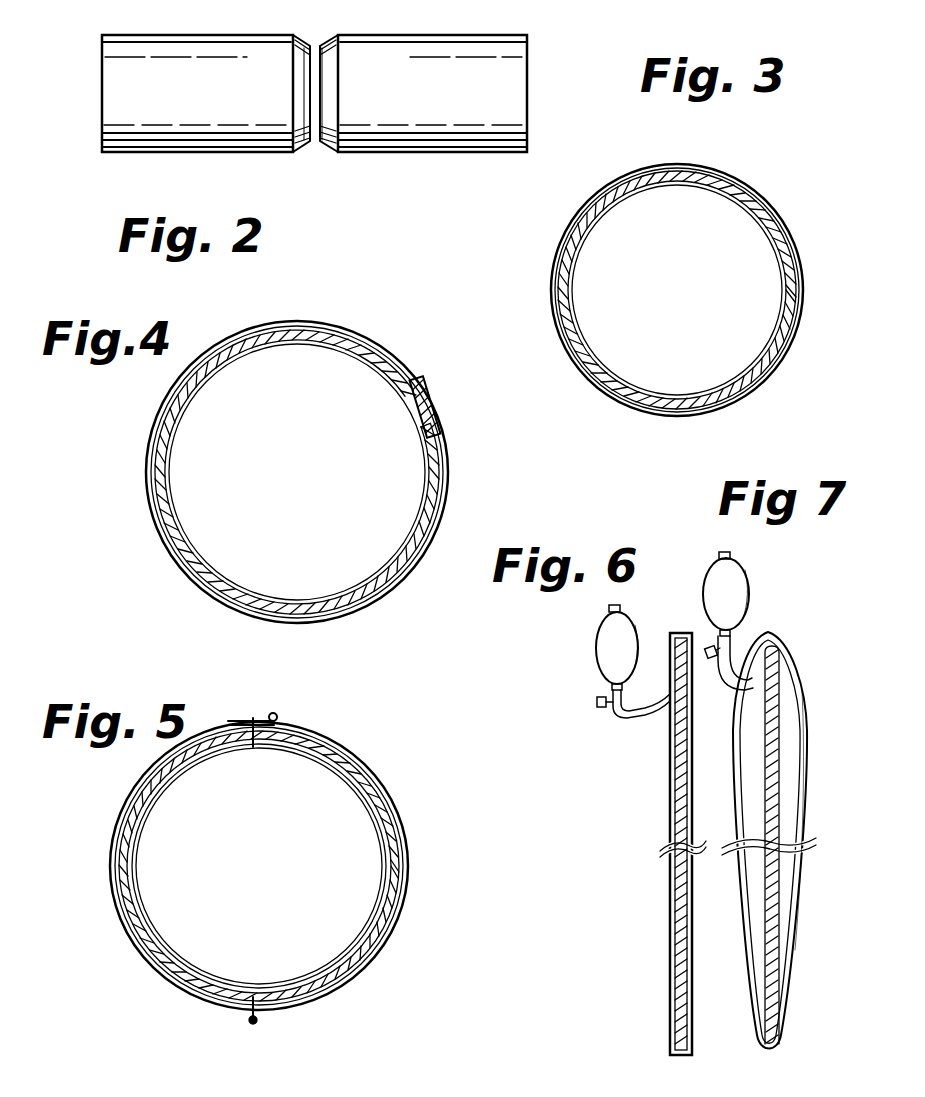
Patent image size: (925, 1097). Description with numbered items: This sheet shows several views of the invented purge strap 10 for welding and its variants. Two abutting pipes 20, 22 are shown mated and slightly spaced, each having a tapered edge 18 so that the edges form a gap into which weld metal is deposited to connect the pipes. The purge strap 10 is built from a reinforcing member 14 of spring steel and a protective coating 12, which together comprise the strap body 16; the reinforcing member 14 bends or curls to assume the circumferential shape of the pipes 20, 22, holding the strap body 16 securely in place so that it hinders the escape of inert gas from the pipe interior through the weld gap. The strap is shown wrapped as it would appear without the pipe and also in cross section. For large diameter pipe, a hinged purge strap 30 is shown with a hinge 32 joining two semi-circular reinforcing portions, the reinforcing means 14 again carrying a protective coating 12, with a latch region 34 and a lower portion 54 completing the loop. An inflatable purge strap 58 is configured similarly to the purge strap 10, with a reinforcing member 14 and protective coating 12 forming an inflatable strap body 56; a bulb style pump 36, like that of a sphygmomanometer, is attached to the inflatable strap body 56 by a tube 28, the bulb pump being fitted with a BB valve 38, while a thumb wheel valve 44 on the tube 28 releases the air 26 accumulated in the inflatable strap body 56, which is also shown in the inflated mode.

In FIG. 3, the purge strap 10 is at (645, 264).
In FIG. 4, the purge strap 10 is at (307, 454).
In FIG. 3, the protective coating 12 is at (738, 166).
In FIG. 4, the protective coating 12 is at (440, 386).
In FIG. 5, the protective coating 12 is at (400, 828).
In FIG. 6, the protective coating 12 is at (672, 1010).
In FIG. 7, the protective coating 12 is at (738, 884).
In FIG. 3, the reinforcing member 14 is at (565, 234).
In FIG. 4, the reinforcing member 14 is at (163, 464).
In FIG. 5, the reinforcing member 14 is at (400, 866).
In FIG. 6, the reinforcing member 14 is at (670, 794).
In FIG. 7, the reinforcing member 14 is at (778, 775).
In FIG. 2, the strap body 16 is at (308, 47).
In FIG. 3, the strap body 16 is at (598, 352).
In FIG. 4, the strap body 16 is at (210, 576).
In FIG. 2, the tapered edge 18 is at (320, 152).
In FIG. 2, the pipe 20 is at (438, 108).
In FIG. 2, the pipe 22 is at (202, 104).
In FIG. 7, the air 26 is at (790, 908).
In FIG. 6, the tube 28 is at (638, 716).
In FIG. 7, the tube 28 is at (735, 692).
In FIG. 5, the hinged purge strap 30 is at (288, 855).
In FIG. 5, the hinge 32 is at (258, 1024).
In FIG. 5, the outer ring layer 34 is at (376, 772).
In FIG. 6, the bulb style pump 36 is at (597, 647).
In FIG. 7, the bulb style pump 36 is at (740, 590).
In FIG. 6, the BB valve 38 is at (606, 605).
In FIG. 7, the BB valve 38 is at (725, 552).
In FIG. 6, the thumb wheel valve 44 is at (597, 703).
In FIG. 7, the thumb wheel valve 44 is at (738, 650).
In FIG. 5, the top clamp 54 is at (238, 1016).
In FIG. 6, the inflatable strap body 56 is at (662, 964).
In FIG. 6, the inflatable purge strap 58 is at (650, 978).